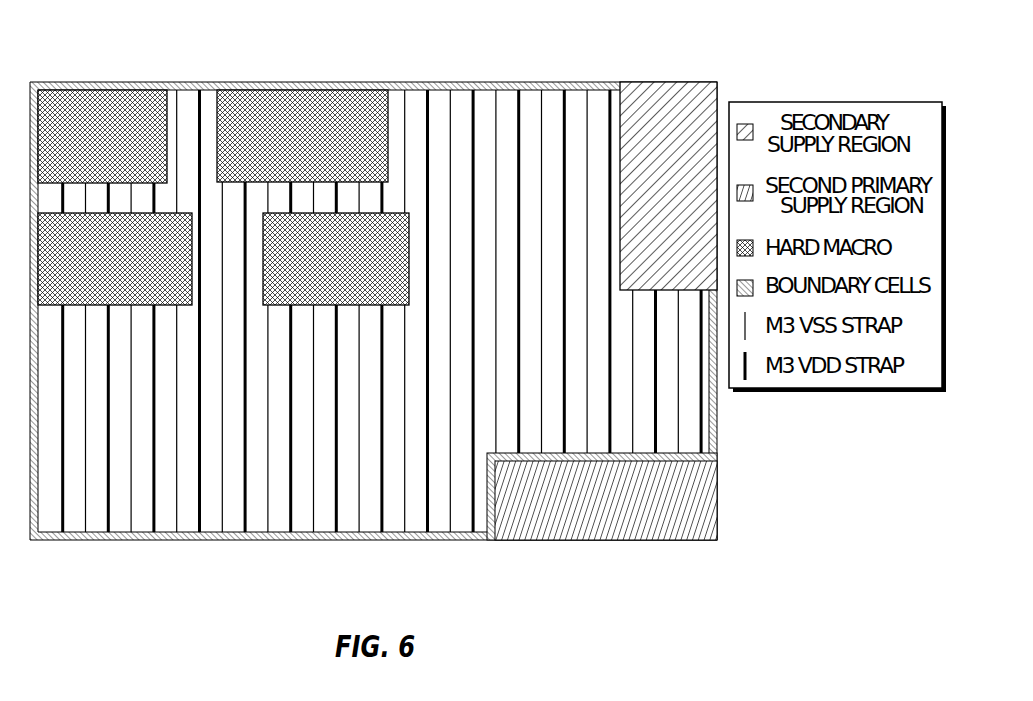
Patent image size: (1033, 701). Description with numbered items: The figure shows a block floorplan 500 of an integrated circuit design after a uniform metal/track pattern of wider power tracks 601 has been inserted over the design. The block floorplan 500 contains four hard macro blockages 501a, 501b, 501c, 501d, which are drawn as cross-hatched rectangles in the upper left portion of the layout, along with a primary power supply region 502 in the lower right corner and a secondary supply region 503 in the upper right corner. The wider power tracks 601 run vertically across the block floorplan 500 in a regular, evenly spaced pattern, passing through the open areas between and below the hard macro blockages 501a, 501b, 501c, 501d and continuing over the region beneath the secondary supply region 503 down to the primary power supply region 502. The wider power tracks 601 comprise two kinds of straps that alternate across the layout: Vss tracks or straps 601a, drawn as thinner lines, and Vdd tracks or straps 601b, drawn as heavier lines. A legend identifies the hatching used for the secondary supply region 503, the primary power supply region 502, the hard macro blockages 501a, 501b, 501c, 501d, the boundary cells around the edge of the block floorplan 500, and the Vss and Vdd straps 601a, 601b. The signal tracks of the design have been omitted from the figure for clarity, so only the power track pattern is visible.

The block floorplan 500 is at (822, 48).
The hard macro blockage 501a is at (128, 147).
The hard macro blockage 501b is at (328, 149).
The hard macro blockage 501c is at (142, 271).
The hard macro blockage 501d is at (363, 271).
The primary power supply region 502 is at (627, 512).
The secondary supply region 503 is at (688, 196).
The wider power tracks 601 is at (108, 516).
The Vss tracks or straps 601a is at (268, 515).
The Vdd tracks or straps 601b is at (336, 512).